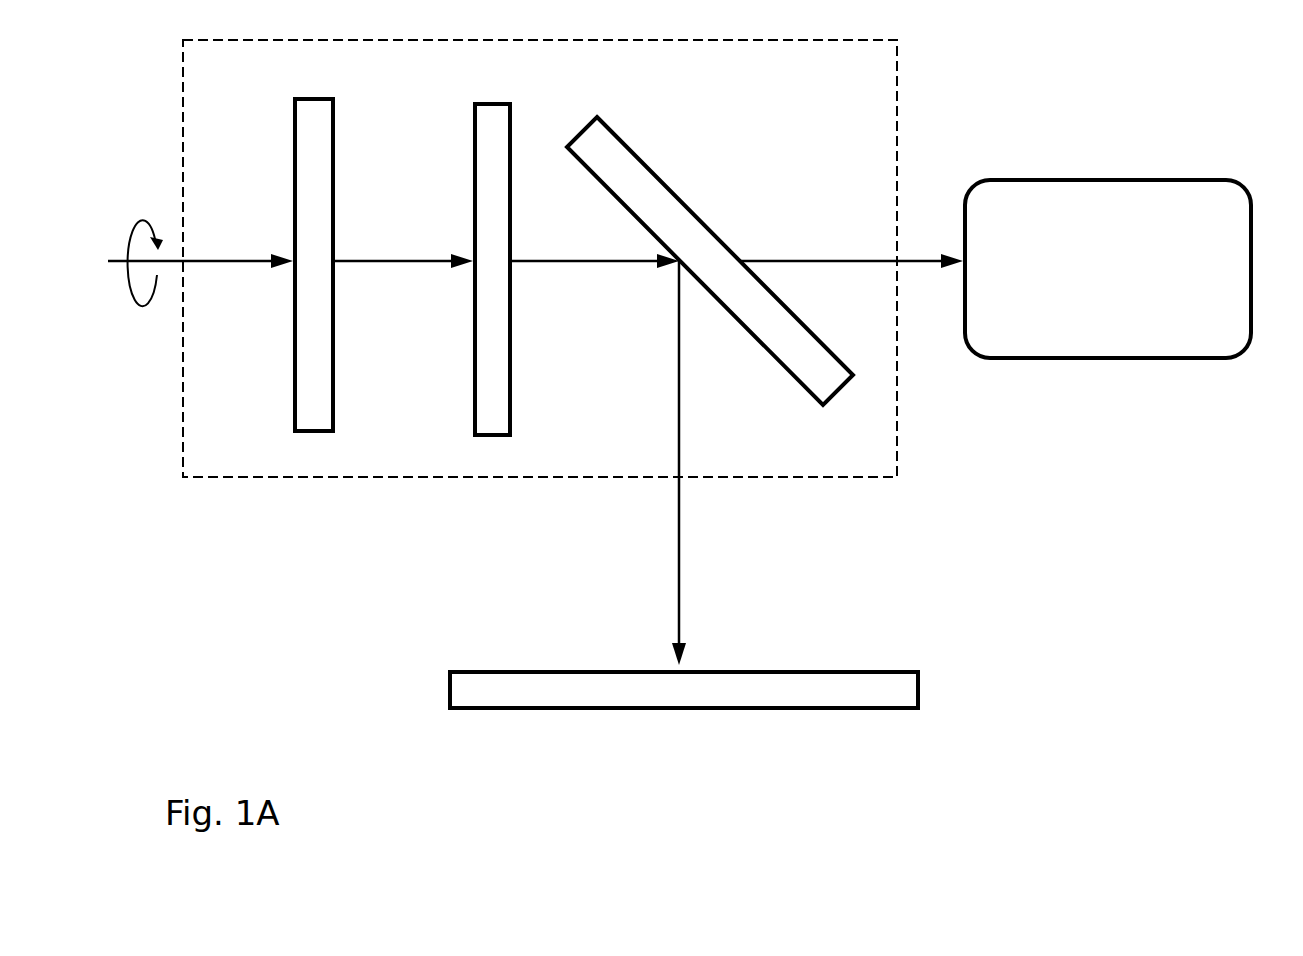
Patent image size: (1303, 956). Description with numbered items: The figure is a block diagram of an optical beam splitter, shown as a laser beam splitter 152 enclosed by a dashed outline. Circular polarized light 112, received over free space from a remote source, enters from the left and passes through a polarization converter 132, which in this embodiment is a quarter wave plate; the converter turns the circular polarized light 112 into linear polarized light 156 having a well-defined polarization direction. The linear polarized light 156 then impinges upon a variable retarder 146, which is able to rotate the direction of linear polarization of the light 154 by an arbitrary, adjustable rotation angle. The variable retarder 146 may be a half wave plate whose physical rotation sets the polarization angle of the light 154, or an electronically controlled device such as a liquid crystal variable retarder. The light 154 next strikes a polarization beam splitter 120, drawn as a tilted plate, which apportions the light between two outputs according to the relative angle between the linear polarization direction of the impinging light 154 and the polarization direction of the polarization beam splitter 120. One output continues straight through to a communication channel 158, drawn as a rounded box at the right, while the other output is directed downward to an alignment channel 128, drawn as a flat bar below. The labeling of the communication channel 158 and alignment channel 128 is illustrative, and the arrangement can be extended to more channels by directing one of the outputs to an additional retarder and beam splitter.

The circular polarized light 112 is at (207, 263).
The polarization beam splitter 120 is at (660, 178).
The alignment channel 128 is at (583, 665).
The polarization converter 132 is at (293, 187).
The variable retarder 146 is at (473, 190).
The laser beam splitter 152 is at (183, 120).
The light 154 is at (543, 263).
The linear polarized light 156 is at (360, 263).
The communication channel 158 is at (1137, 178).